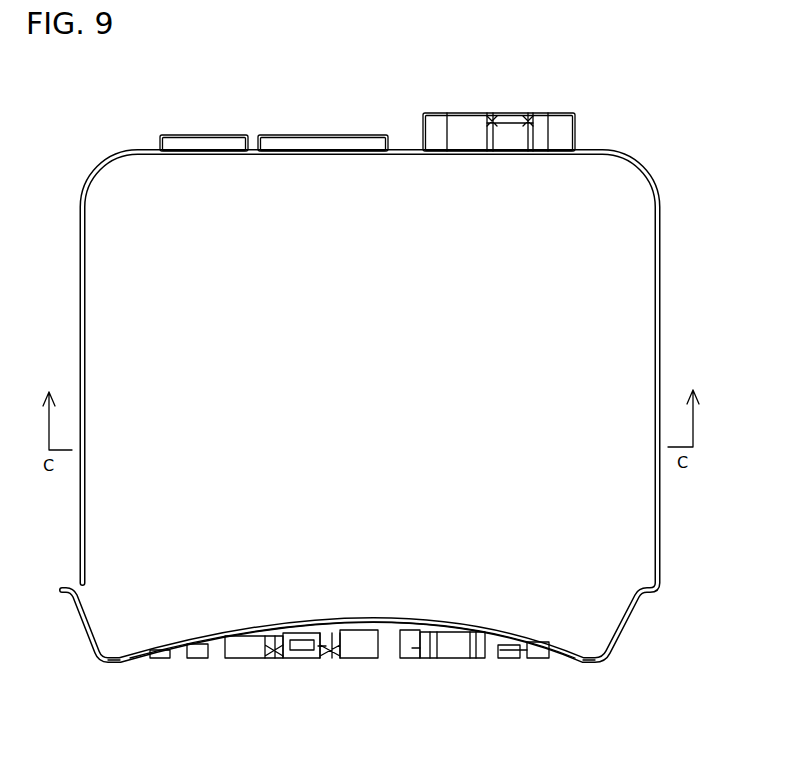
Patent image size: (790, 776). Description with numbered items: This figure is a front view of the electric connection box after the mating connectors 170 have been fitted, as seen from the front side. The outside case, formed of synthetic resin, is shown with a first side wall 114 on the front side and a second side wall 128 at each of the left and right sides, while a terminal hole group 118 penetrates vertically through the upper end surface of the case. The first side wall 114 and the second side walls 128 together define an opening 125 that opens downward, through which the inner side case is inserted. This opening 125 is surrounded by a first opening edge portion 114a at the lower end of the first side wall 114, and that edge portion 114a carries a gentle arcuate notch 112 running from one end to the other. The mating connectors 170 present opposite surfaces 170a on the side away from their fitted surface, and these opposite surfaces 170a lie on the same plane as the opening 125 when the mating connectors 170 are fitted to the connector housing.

The terminal hole group 118 is at (212, 135).
The second side wall 128 is at (660, 318).
The first side wall 114 is at (118, 550).
The opening 125 is at (118, 664).
The gentle arcuate notch 112 is at (255, 640).
The mating connector 170 is at (190, 660).
The opposite surface 170a is at (165, 660).
The first opening edge portion 114a is at (575, 662).